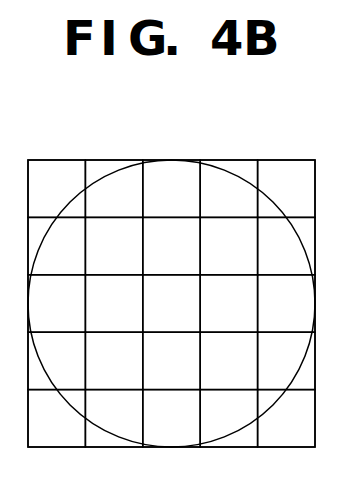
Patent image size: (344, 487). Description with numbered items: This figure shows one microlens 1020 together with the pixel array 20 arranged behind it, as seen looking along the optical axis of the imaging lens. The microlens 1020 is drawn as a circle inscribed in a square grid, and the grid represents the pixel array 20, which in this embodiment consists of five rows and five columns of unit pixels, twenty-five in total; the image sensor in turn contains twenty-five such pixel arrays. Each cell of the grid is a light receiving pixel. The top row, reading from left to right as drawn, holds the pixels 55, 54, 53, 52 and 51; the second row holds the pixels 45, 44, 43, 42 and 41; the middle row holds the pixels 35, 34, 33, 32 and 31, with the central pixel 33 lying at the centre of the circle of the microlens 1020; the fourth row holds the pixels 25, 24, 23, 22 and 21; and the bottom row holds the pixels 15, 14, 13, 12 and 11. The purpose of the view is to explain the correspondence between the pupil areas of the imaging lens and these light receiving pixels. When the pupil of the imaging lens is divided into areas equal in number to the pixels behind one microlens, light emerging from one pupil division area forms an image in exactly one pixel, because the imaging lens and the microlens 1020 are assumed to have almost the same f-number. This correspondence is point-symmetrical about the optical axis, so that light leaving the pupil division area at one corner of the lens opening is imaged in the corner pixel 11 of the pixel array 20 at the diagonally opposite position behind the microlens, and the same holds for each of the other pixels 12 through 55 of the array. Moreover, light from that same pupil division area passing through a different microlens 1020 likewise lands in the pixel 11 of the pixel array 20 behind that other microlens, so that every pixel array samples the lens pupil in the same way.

The pixel array 20 is at (171, 286).
The microlens 1020 is at (108, 173).
The pixel p55 55 is at (56, 188).
The pixel p54 54 is at (113, 188).
The pixel p53 53 is at (171, 188).
The pixel p52 52 is at (228, 188).
The pixel p51 51 is at (286, 188).
The pixel p45 45 is at (56, 245).
The pixel p44 44 is at (113, 245).
The pixel p43 43 is at (171, 245).
The pixel p42 42 is at (228, 245).
The pixel p41 41 is at (286, 245).
The pixel p35 35 is at (56, 303).
The pixel p34 34 is at (113, 303).
The pixel p33 33 is at (171, 303).
The pixel p32 32 is at (228, 303).
The pixel p31 31 is at (286, 303).
The pixel p25 25 is at (56, 360).
The pixel p24 24 is at (113, 360).
The pixel p23 23 is at (171, 360).
The pixel p22 22 is at (228, 360).
The pixel p21 21 is at (286, 360).
The pixel p15 15 is at (56, 418).
The pixel p14 14 is at (113, 418).
The pixel p13 13 is at (171, 418).
The pixel p12 12 is at (228, 418).
The pixel p11 11 is at (286, 418).